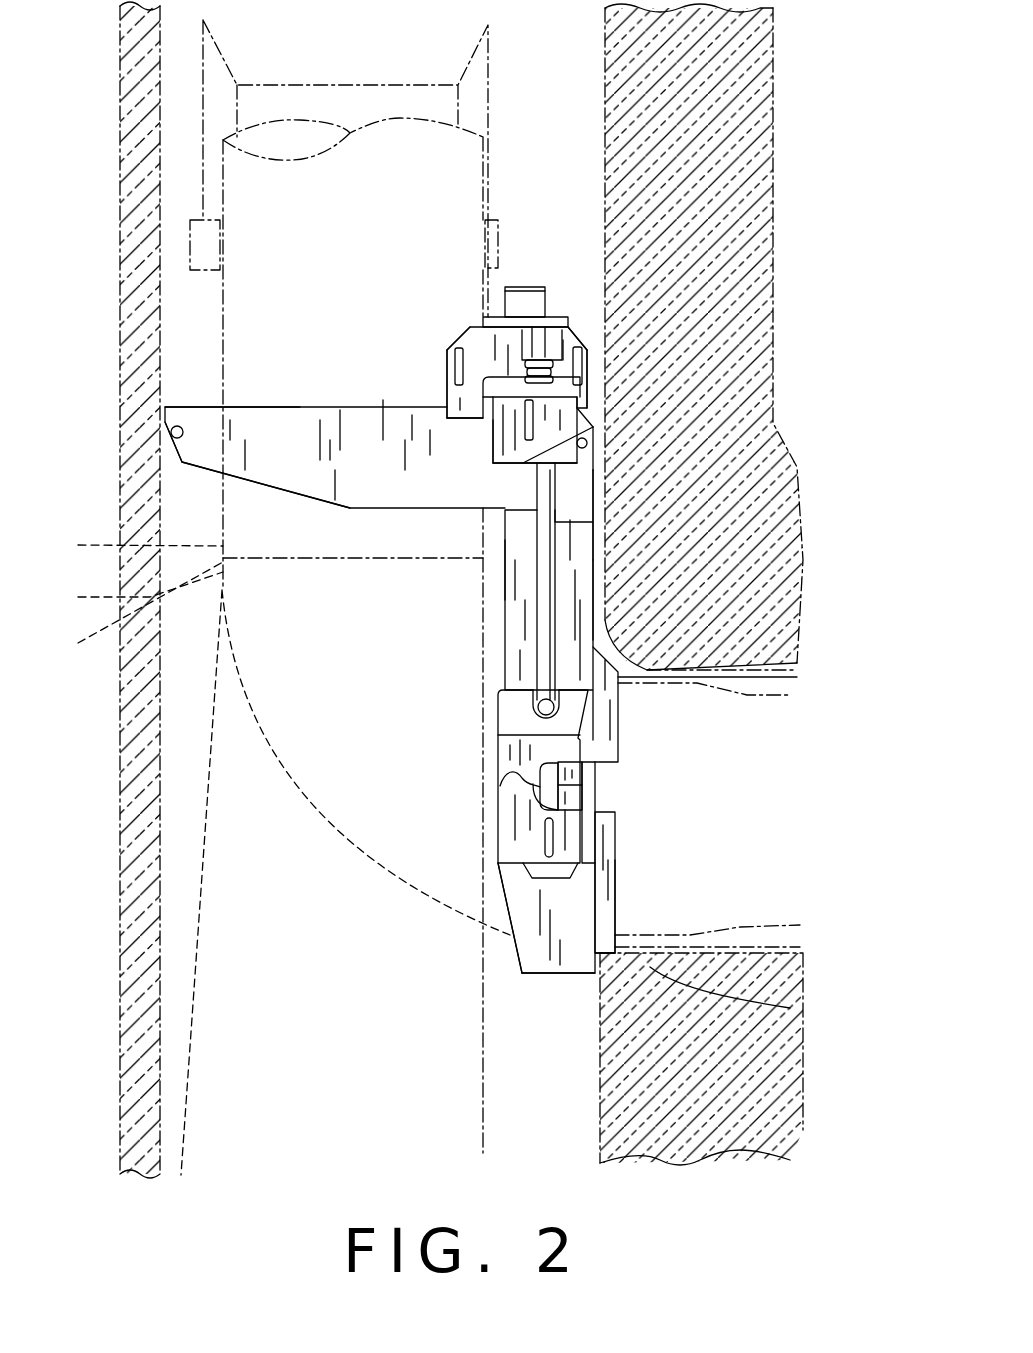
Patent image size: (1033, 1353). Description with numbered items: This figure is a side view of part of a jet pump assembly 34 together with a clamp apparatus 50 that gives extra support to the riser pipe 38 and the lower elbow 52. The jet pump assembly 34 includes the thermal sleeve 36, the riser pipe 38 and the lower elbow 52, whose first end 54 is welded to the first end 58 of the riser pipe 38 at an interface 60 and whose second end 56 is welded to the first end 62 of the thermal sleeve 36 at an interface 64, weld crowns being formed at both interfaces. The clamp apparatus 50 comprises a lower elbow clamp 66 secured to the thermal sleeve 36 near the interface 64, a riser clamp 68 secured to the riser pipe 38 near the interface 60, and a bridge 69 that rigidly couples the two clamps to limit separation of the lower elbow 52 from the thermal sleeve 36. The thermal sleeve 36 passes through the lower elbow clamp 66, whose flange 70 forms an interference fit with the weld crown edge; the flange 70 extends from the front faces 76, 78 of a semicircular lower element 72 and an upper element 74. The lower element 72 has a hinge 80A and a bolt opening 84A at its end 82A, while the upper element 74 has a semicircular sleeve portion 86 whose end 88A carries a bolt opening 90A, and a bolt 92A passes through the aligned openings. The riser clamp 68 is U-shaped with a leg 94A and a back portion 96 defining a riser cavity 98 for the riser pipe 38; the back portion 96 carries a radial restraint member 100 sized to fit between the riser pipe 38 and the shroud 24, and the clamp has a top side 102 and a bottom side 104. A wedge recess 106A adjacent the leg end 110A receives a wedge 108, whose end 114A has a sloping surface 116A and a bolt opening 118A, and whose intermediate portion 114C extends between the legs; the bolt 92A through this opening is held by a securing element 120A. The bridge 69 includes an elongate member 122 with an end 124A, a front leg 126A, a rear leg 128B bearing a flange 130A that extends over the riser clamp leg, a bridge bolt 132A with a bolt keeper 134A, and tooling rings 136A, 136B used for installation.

The shroud 24 is at (120, 710).
The jet pump assembly 34 is at (523, 98).
The thermal sleeve 36 is at (803, 962).
The riser pipe 38 is at (405, 118).
The clamp apparatus 50 is at (540, 267).
The lower elbow 52 is at (337, 866).
The first end of lower elbow 54 is at (133, 610).
The second end of lower elbow 56 is at (516, 950).
The first end of riser pipe 58 is at (133, 547).
The interface 60 is at (133, 593).
The first end of thermal sleeve 62 is at (790, 1008).
The interface 64 is at (595, 792).
The lower elbow clamp 66 is at (568, 985).
The riser clamp 68 is at (306, 407).
The bridge 69 is at (582, 328).
The flange 70 is at (615, 845).
The lower element 72 is at (520, 868).
The upper element 74 is at (500, 742).
The front face of lower element 76 is at (612, 892).
The front face of upper element 78 is at (607, 740).
The hinge 80A is at (500, 786).
The lower element end 82A is at (507, 816).
The bolt opening 84A is at (505, 895).
The sleeve portion 86 is at (505, 672).
The end of upper element 88A is at (498, 770).
The bolt opening 90A is at (537, 698).
The bolt 92A is at (543, 620).
The leg of riser clamp 94A is at (405, 440).
The back portion 96 is at (250, 470).
The riser cavity 98 is at (264, 402).
The radial restraint member 100 is at (182, 405).
The top side of riser clamp 102 is at (346, 407).
The bottom side of riser clamp 104 is at (490, 430).
The wedge recess 106A is at (490, 440).
The wedge 108 is at (505, 565).
The leg end 110A is at (597, 470).
The wedge end 114A is at (490, 525).
The intermediate portion of wedge 114C is at (583, 420).
The sloping surface 116A is at (597, 505).
The bolt opening 118A is at (590, 443).
The securing element 120A is at (587, 352).
The elongate member 122 is at (470, 327).
The end of elongate member 124A is at (458, 338).
The front leg 126A is at (580, 385).
The rear leg 128B is at (383, 400).
The flange 130A is at (483, 418).
The bridge bolt 132A is at (508, 287).
The bolt keeper 134A is at (568, 322).
The tooling ring 136A is at (455, 348).
The tooling ring 136B is at (587, 370).